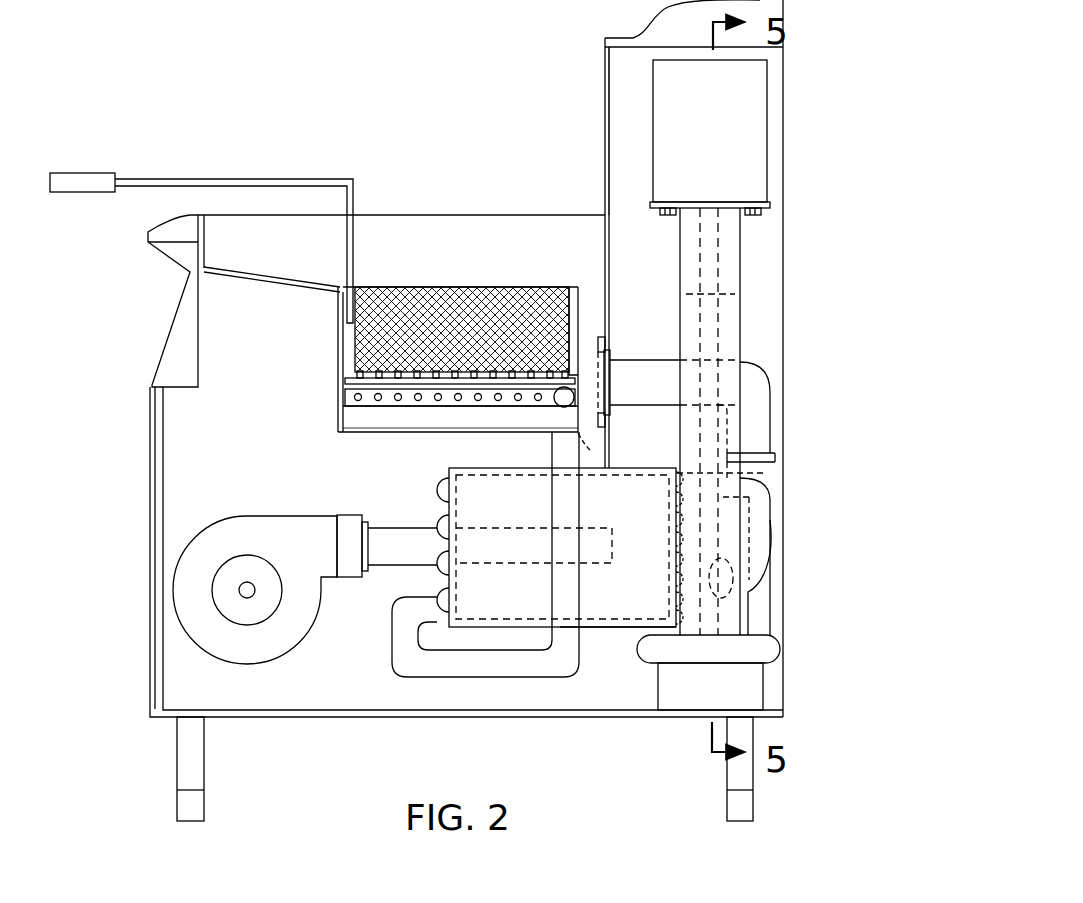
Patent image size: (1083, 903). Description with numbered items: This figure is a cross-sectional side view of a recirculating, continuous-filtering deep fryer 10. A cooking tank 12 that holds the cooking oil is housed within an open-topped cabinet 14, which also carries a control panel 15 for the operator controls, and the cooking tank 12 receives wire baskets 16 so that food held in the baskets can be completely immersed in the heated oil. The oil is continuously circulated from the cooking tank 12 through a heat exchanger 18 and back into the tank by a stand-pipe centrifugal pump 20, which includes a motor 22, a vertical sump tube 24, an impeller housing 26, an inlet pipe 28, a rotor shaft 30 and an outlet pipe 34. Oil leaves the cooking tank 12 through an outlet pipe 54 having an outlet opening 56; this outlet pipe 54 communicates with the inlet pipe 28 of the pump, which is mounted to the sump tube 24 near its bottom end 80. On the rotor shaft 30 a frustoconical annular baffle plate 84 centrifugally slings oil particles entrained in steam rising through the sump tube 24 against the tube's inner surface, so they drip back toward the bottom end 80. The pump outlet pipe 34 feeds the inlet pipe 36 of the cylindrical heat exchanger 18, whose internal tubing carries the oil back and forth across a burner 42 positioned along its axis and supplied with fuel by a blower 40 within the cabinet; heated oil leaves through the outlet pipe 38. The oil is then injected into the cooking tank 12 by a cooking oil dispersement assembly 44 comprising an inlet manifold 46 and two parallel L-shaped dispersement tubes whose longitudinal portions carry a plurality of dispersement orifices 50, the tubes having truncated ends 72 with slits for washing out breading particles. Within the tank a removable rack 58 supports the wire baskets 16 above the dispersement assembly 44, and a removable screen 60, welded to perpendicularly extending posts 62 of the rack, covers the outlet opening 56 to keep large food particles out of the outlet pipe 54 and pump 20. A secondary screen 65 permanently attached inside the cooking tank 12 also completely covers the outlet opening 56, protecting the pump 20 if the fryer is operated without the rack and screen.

The recirculating, continuous-filtering deep fryer 10 is at (793, 132).
The cooking tank 12 is at (462, 272).
The open-topped cabinet 14 is at (767, 315).
The control panel 15 is at (165, 344).
The wire baskets 16 is at (356, 244).
The heat exchanger 18 is at (612, 630).
The stand-pipe centrifugal pump 20 is at (768, 342).
The motor 22 is at (746, 180).
The vertical sump tube 24 is at (736, 387).
The impeller (stator) housing 26 is at (769, 647).
The inlet pipe 28 is at (758, 536).
The rotor shaft 30 is at (716, 246).
The outlet pipe 34 is at (746, 621).
The inlet pipe 36 is at (683, 456).
The outlet pipe 38 is at (405, 632).
The blower 40 is at (267, 528).
The burner 42 is at (590, 547).
The cooking oil dispersement assembly 44 is at (426, 413).
The inlet manifold 46 is at (566, 430).
The dispersement orifices 50 is at (355, 410).
The outlet pipe 54 is at (646, 395).
The outlet opening 56 is at (611, 381).
The removable rack 58 is at (352, 375).
The removable screen 60 is at (579, 318).
The posts 62 is at (574, 290).
The secondary screen 65 is at (585, 440).
The truncated ends 72 is at (425, 437).
The bottom end 80 is at (693, 622).
The frustoconical, annular baffle plate 84 is at (735, 294).